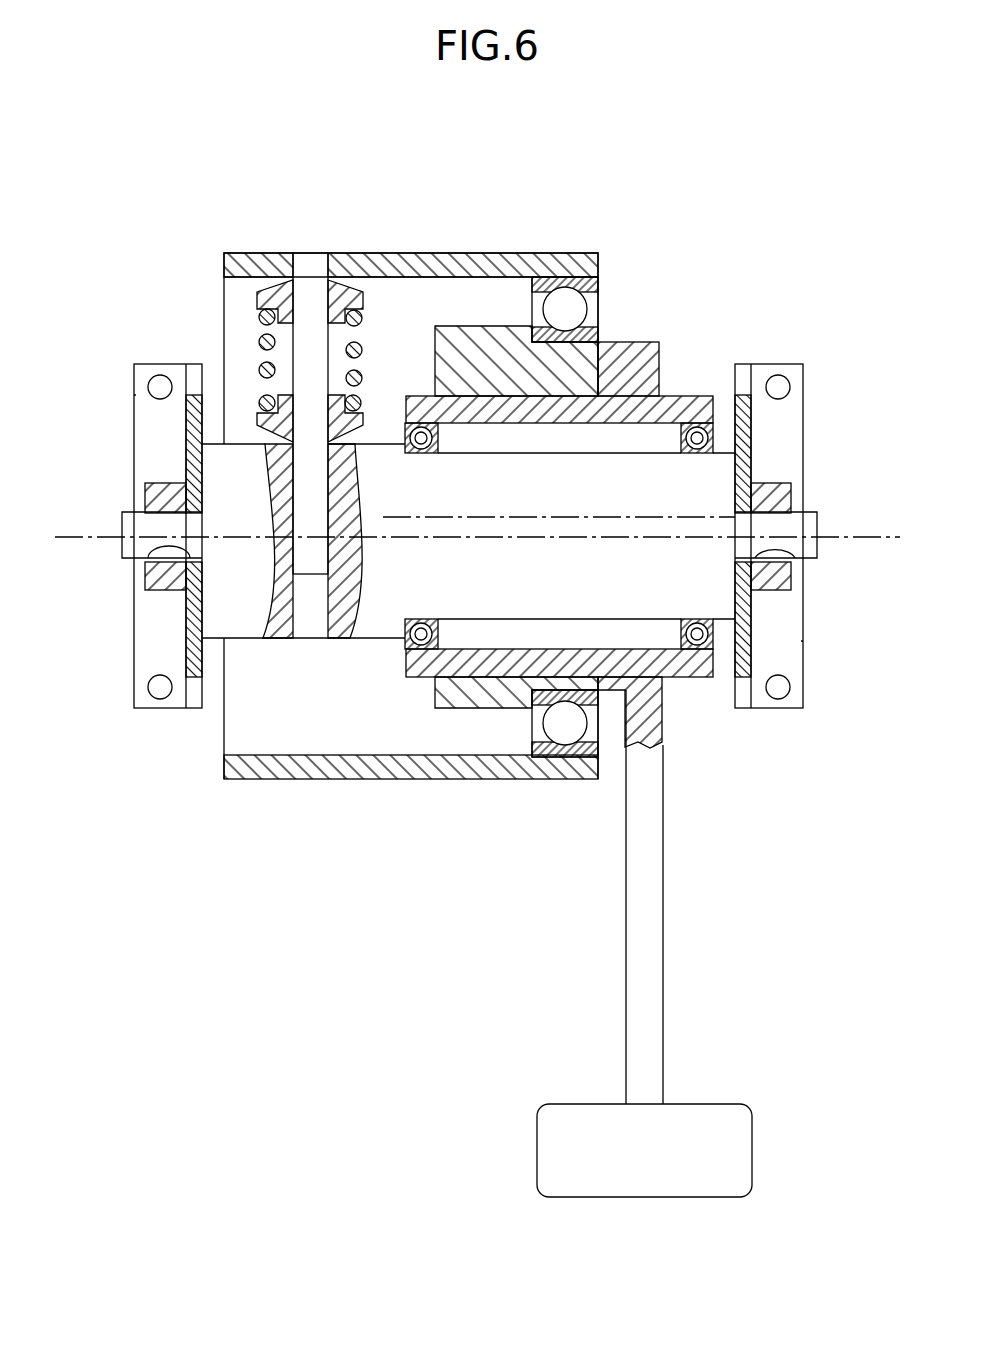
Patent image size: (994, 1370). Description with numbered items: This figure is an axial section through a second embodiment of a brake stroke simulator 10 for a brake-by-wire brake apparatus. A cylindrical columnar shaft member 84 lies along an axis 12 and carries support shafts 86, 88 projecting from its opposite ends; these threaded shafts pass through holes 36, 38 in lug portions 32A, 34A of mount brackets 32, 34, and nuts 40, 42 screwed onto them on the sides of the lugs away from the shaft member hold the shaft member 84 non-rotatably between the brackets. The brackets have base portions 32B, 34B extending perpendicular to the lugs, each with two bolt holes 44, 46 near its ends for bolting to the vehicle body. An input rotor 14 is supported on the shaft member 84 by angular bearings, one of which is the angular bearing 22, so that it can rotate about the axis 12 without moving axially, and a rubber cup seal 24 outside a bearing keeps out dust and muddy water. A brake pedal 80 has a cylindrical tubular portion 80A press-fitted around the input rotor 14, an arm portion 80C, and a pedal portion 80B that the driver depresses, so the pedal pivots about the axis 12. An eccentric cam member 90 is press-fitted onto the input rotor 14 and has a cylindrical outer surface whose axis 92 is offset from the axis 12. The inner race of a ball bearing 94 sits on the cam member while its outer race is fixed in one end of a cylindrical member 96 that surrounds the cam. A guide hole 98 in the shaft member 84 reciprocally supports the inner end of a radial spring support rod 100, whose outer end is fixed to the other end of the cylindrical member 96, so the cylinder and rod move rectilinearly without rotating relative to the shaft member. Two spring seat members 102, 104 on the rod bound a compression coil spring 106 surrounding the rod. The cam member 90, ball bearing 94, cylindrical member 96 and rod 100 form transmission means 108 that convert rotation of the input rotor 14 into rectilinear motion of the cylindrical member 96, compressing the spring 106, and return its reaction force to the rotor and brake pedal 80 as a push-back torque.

The brake stroke simulator 10 is at (650, 254).
The axis 12 is at (848, 535).
The input rotor 14 is at (418, 672).
The angular bearing 22 is at (697, 624).
The cup seal 24 is at (421, 624).
The mount bracket 32 is at (799, 549).
The lug portion 32A is at (744, 700).
The base portion 32B is at (803, 641).
The mount bracket 34 is at (131, 541).
The lug portion 34A is at (192, 700).
The base portion 34B is at (134, 634).
The hole 36 is at (790, 560).
The hole 38 is at (140, 562).
The nut 40 is at (775, 485).
The nut 42 is at (165, 485).
The bolt holes 44 is at (778, 376).
The bolt holes 46 is at (160, 376).
The brake pedal 80 is at (682, 884).
The cylindrical tubular portion 80A is at (640, 350).
The pedal portion 80B is at (710, 1108).
The arm portion 80C is at (632, 943).
The shaft member 84 is at (571, 590).
The support shaft 86 is at (805, 525).
The support shaft 88 is at (130, 522).
The eccentric cam member 90 is at (455, 338).
The axis 92 is at (505, 517).
The ball bearing 94 is at (563, 300).
The cylindrical member 96 is at (358, 780).
The guide hole 98 is at (295, 612).
The spring support rod 100 is at (298, 498).
The spring seat member 102 is at (338, 262).
The spring seat member 104 is at (357, 420).
The compression coil spring 106 is at (370, 318).
The transmission means 108 is at (411, 522).